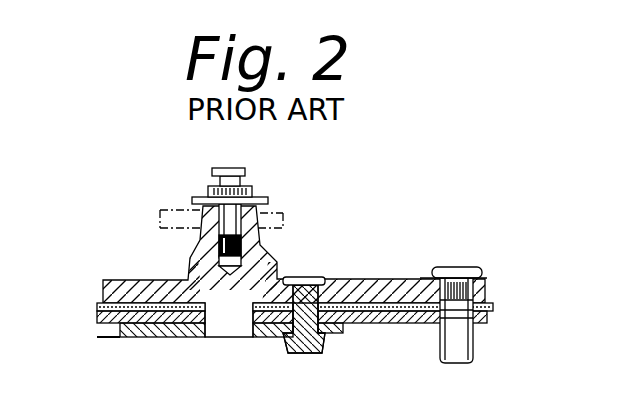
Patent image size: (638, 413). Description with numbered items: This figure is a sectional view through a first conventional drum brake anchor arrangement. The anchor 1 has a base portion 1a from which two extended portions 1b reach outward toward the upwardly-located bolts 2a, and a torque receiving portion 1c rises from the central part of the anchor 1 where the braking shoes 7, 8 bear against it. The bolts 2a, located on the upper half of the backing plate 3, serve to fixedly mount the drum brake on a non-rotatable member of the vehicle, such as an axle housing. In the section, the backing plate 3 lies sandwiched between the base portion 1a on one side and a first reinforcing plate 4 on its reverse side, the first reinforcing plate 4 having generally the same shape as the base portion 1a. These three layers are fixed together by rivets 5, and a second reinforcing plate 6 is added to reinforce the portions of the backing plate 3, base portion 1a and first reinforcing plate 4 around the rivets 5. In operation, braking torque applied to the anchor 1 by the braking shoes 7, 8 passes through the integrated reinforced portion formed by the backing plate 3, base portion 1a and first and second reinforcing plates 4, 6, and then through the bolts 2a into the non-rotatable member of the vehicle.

The anchor 1 is at (284, 250).
The base portion 1a is at (147, 279).
The extended portions 1b is at (408, 277).
The torque receiving portion 1c is at (205, 228).
The bolt 2a is at (464, 268).
The backing plate 3 is at (494, 305).
The first reinforcing plate 4 is at (388, 318).
The rivets 5 is at (297, 348).
The second reinforcing plate 6 is at (170, 330).
The braking shoe 7 is at (178, 212).
The braking shoe 8 is at (278, 210).